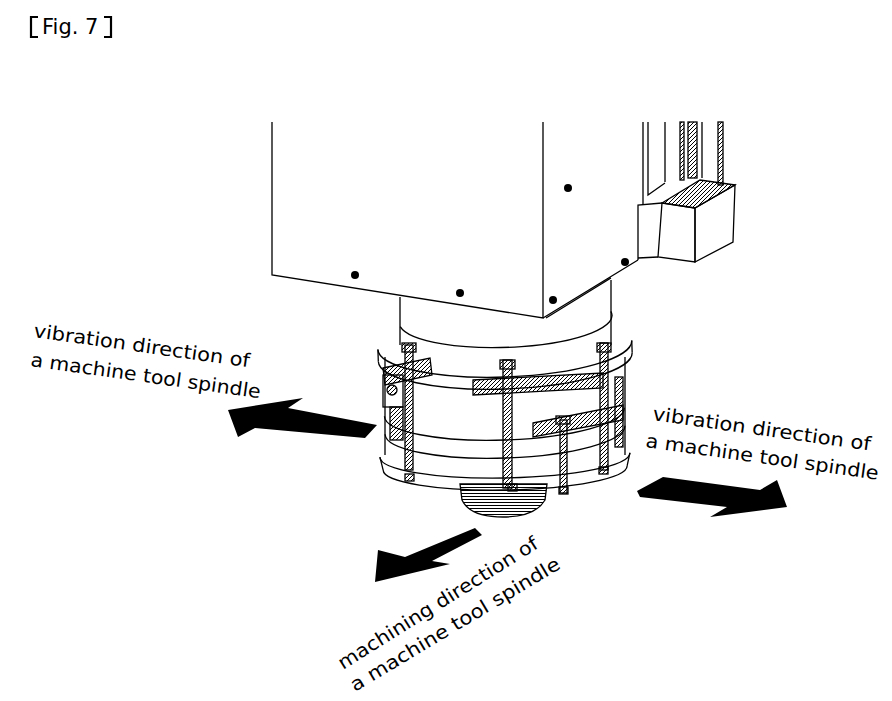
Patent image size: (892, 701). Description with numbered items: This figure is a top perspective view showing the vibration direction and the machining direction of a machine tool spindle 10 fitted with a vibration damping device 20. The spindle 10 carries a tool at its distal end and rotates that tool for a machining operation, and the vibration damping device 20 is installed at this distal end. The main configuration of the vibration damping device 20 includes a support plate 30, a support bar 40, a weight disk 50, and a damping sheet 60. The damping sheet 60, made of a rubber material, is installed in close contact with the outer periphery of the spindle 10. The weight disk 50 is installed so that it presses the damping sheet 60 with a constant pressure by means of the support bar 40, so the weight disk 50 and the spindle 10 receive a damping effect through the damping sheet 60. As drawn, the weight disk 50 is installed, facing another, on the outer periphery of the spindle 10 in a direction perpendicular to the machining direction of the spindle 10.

The machine tool spindle 10 is at (313, 262).
The vibration damping device 20 is at (650, 376).
The support plate 30 is at (407, 470).
The support bar 40 is at (380, 446).
The weight disk 50 is at (383, 352).
The damping sheet 60 is at (405, 344).